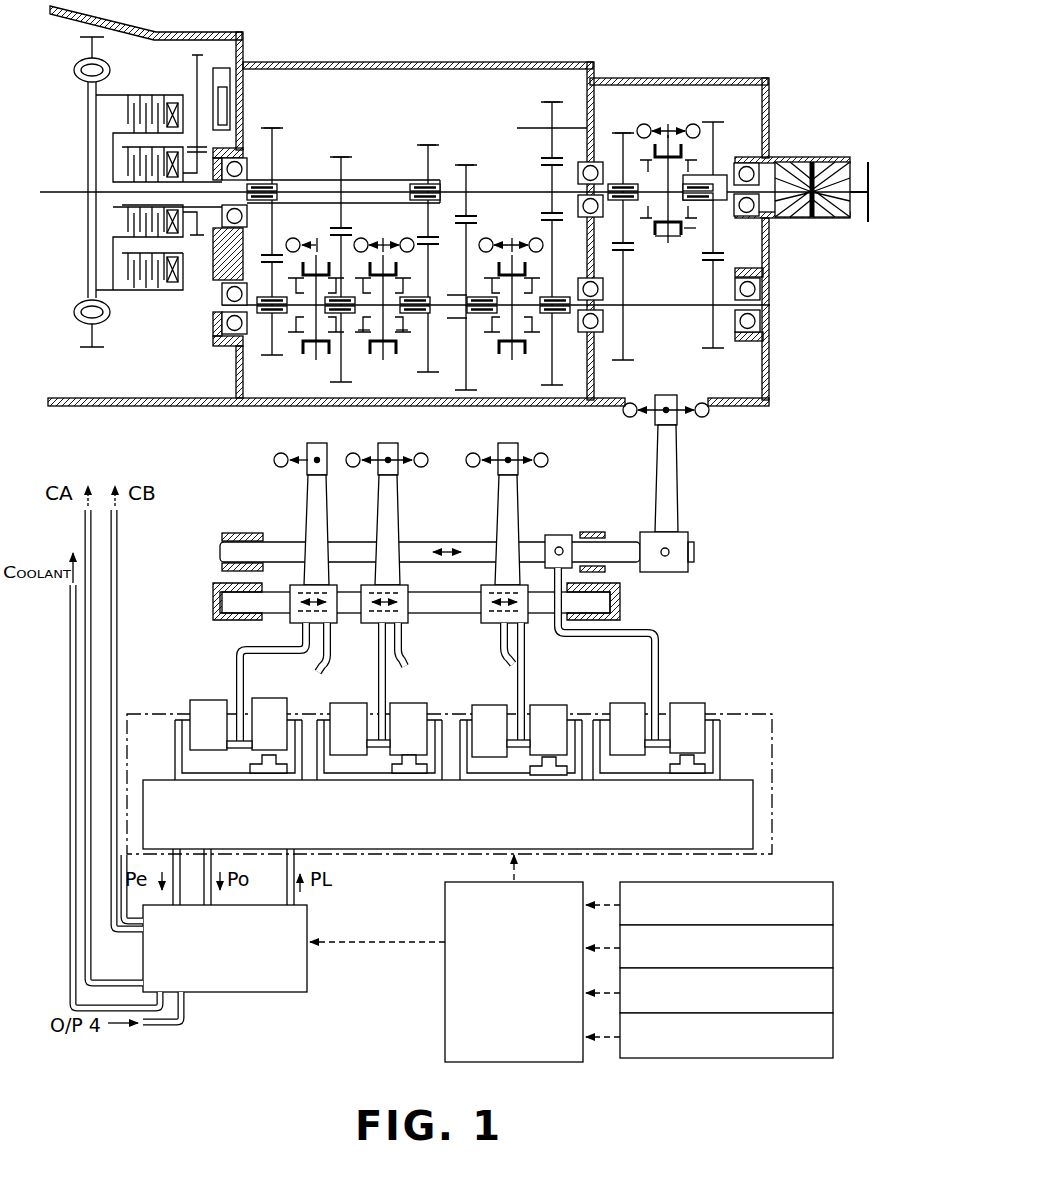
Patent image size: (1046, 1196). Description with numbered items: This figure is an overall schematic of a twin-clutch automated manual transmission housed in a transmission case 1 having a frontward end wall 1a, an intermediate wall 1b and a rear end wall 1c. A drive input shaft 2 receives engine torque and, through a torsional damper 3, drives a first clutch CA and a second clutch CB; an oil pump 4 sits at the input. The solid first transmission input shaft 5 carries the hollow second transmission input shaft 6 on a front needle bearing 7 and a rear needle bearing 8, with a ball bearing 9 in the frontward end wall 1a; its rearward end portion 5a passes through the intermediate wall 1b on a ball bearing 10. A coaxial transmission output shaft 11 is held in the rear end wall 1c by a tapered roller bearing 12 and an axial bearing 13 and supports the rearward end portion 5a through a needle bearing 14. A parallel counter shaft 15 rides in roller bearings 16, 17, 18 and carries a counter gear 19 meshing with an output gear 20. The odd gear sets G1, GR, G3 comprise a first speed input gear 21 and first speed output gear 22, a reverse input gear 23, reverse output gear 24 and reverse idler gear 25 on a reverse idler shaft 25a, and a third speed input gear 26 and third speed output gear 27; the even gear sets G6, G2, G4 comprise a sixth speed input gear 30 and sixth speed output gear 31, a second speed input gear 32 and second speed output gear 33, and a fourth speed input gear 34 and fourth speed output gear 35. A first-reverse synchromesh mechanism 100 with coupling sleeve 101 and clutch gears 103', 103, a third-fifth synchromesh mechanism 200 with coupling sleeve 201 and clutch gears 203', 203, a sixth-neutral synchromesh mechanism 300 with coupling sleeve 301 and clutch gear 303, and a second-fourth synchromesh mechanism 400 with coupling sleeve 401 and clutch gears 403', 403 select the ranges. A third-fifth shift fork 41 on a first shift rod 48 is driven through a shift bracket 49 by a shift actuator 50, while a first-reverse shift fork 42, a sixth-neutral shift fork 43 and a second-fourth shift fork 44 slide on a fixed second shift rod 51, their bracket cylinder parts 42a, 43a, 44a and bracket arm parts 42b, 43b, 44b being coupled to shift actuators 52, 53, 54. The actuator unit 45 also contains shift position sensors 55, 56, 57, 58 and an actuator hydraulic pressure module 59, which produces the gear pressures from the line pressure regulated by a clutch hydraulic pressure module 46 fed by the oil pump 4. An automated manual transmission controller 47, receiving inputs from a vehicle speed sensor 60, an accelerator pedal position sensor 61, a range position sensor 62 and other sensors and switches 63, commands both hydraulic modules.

The transmission case 1 is at (652, 74).
The frontward end wall 1a is at (244, 100).
The intermediate wall 1b is at (592, 124).
The rear end wall 1c is at (770, 108).
The drive input shaft 2 is at (66, 190).
The torsional damper 3 is at (74, 62).
The oil pump 4 is at (222, 70).
The first transmission input shaft 5 is at (303, 188).
The rearward end portion 5a is at (487, 192).
The second transmission input shaft 6 is at (363, 180).
The front needle bearing 7 is at (258, 184).
The rear needle bearing 8 is at (416, 184).
The ball bearing 9 is at (250, 160).
The ball bearing 10 is at (600, 172).
The transmission output shaft 11 is at (860, 175).
The tapered roller bearing 12 is at (746, 162).
The axial bearing 13 is at (812, 162).
The needle bearing 14 is at (705, 200).
The counter shaft 15 is at (671, 307).
The roller bearing 16 is at (222, 325).
The roller bearing 17 is at (593, 333).
The roller bearing 18 is at (760, 322).
The counter gear 19 is at (713, 350).
The output gear 20 is at (713, 122).
The first speed input gear 21 is at (466, 165).
The first speed output gear 22 is at (466, 392).
The reverse input gear 23 is at (552, 175).
The reverse output gear 24 is at (553, 387).
The reverse idler gear 25 is at (552, 115).
The reverse idler shaft 25a is at (552, 135).
The third speed input gear 26 is at (623, 133).
The third speed output gear 27 is at (623, 362).
The sixth speed input gear 30 is at (276, 150).
The sixth speed output gear 31 is at (270, 357).
The second speed input gear 32 is at (341, 157).
The second speed output gear 33 is at (341, 384).
The fourth speed input gear 34 is at (428, 145).
The fourth speed output gear 35 is at (428, 374).
The 3-5 shift fork 41 is at (677, 468).
The 1-R shift fork 42 is at (521, 500).
The bracket cylinder part 42a is at (529, 628).
The bracket arm part 42b is at (527, 670).
The 6-N shift fork 43 is at (308, 497).
The bracket cylinder part 43a is at (325, 646).
The bracket arm part 43b is at (315, 672).
The 2-4 shift fork 44 is at (389, 500).
The bracket cylinder part 44a is at (401, 626).
The bracket arm part 44b is at (388, 670).
The actuator unit 45 is at (756, 702).
The clutch hydraulic pressure module 46 is at (297, 992).
The automated manual transmission controller 47 is at (447, 988).
The first shift rod 48 is at (436, 542).
The 3-5 shift bracket 49 is at (617, 634).
The 3-5 shift actuator 50 is at (684, 703).
The second shift rod 51 is at (431, 592).
The 1-R shift actuator 52 is at (556, 705).
The 6-N shift actuator 53 is at (270, 700).
The 2-4 shift actuator 54 is at (421, 705).
The 3-5 shift position sensor 55 is at (695, 776).
The 1-R shift position sensor 56 is at (553, 778).
The 6-N shift position sensor 57 is at (272, 776).
The 2-4 shift position sensor 58 is at (412, 776).
The actuator hydraulic pressure module 59 is at (755, 790).
The vehicle speed sensor 60 is at (833, 893).
The accelerator pedal position sensor 61 is at (833, 938).
The range position sensor 62 is at (833, 982).
The other sensors and switches 63 is at (833, 1027).
The 1-R synchromesh mechanism 100 is at (519, 360).
The coupling sleeve 101 is at (502, 357).
The clutch gear 103 is at (543, 338).
The clutch gear 103' is at (480, 337).
The 3-5 synchromesh mechanism 200 is at (675, 242).
The coupling sleeve 201 is at (662, 250).
The clutch gear 203 is at (697, 242).
The clutch gear 203' is at (639, 230).
The 6-N synchromesh mechanism 300 is at (318, 360).
The coupling sleeve 301 is at (305, 357).
The clutch gear 303 is at (292, 349).
The 2-4 synchromesh mechanism 400 is at (391, 360).
The coupling sleeve 401 is at (372, 357).
The clutch gear 403 is at (415, 351).
The clutch gear 403' is at (366, 354).
The first clutch CA is at (150, 92).
The second clutch CB is at (134, 228).
The first speed gear set G1 is at (468, 161).
The second speed gear set G2 is at (344, 154).
The third speed gear set G3 is at (629, 127).
The fourth speed gear set G4 is at (431, 142).
The sixth speed gear set G6 is at (277, 127).
The reverse gear set GR is at (552, 99).